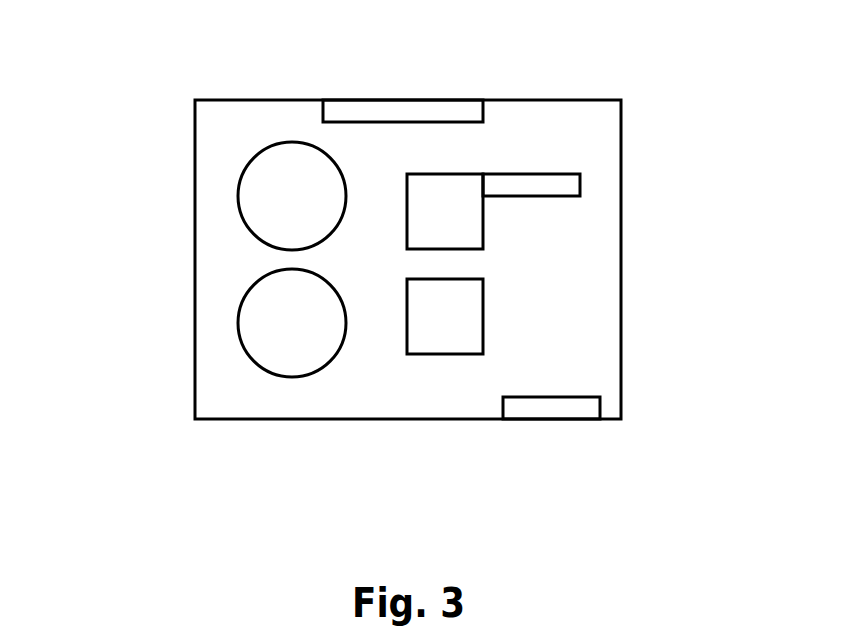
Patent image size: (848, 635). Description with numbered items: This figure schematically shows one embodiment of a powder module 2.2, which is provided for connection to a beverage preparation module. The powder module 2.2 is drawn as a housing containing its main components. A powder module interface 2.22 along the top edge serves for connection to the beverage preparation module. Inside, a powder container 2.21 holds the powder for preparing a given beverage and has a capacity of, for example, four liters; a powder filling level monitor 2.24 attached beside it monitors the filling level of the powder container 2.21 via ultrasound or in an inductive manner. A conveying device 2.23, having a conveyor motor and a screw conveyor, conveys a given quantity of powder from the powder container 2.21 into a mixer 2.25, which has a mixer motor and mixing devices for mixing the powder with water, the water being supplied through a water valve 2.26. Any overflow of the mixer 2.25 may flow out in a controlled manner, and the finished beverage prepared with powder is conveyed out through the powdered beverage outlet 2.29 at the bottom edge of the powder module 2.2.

The powder module 2.2 is at (173, 110).
The powder container 2.21 is at (460, 237).
The powder module interface 2.22 is at (450, 112).
The conveying device 2.23 is at (248, 195).
The powder filling level monitor 2.24 is at (537, 184).
The mixer 2.25 is at (248, 323).
The water valve 2.26 is at (460, 343).
The powdered beverage outlet 2.29 is at (557, 407).